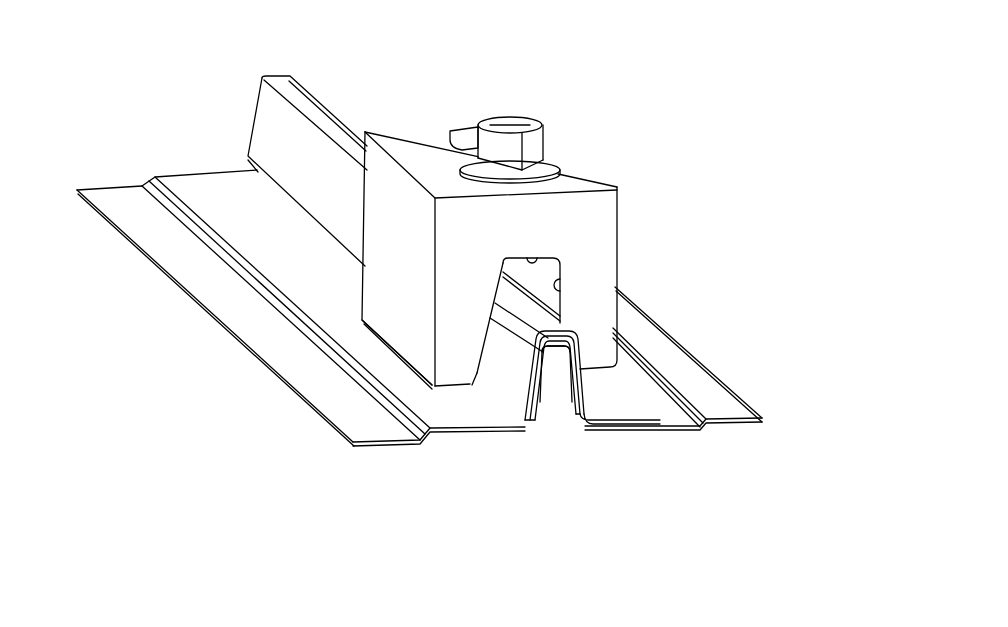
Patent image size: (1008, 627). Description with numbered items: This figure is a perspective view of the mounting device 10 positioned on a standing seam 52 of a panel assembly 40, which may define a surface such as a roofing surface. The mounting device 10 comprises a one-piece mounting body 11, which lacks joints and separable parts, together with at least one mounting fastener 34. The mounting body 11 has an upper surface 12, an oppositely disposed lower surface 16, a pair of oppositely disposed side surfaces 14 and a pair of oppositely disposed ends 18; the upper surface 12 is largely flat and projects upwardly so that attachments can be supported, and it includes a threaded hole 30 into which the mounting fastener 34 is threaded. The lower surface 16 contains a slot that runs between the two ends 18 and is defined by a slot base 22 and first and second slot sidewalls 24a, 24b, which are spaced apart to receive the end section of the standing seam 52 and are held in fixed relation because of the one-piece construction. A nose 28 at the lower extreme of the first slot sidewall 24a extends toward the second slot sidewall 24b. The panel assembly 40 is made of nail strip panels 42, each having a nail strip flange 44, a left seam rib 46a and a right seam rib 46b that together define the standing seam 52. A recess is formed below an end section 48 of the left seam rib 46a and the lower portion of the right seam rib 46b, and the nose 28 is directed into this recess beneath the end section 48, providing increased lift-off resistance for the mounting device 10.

The mounting device 10 is at (712, 89).
The mounting body 11 is at (630, 187).
The upper surface 12 is at (557, 155).
The side surfaces 14 is at (415, 255).
The lower surface 16 is at (463, 390).
The ends 18 is at (590, 230).
The slot base 22 is at (530, 262).
The first slot sidewall 24a is at (483, 337).
The second slot sidewall 24b is at (560, 287).
The nose 28 is at (476, 375).
The threaded hole 30 is at (463, 143).
The mounting fastener 34 is at (503, 123).
The panel assembly 40 is at (405, 461).
The nail strip panel 42 is at (350, 412).
The nail strip flange 44 is at (625, 432).
The left seam rib 46a is at (583, 393).
The right seam rib 46b is at (547, 350).
The end section 48 is at (530, 410).
The standing seam 52 is at (303, 66).